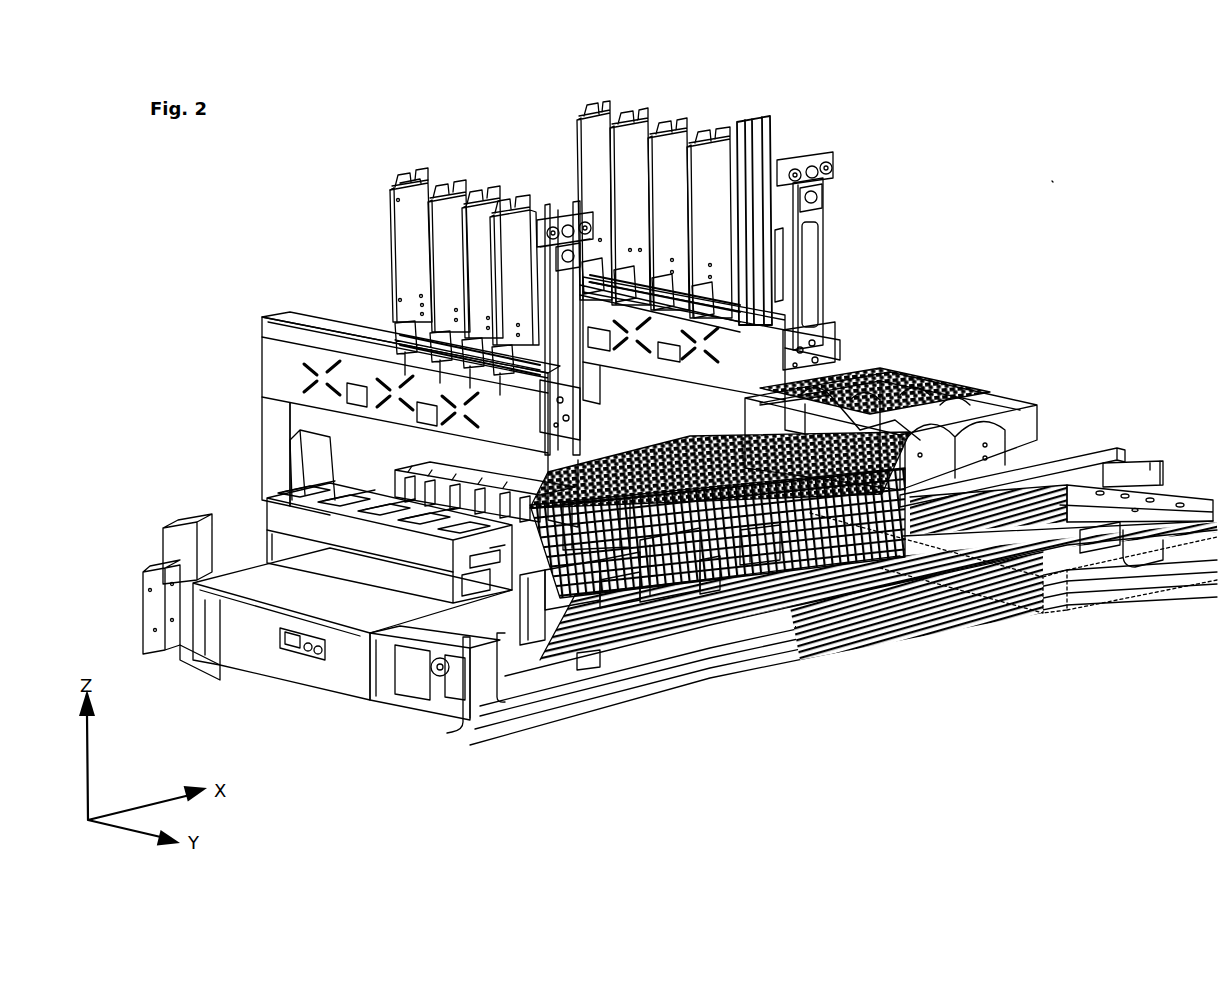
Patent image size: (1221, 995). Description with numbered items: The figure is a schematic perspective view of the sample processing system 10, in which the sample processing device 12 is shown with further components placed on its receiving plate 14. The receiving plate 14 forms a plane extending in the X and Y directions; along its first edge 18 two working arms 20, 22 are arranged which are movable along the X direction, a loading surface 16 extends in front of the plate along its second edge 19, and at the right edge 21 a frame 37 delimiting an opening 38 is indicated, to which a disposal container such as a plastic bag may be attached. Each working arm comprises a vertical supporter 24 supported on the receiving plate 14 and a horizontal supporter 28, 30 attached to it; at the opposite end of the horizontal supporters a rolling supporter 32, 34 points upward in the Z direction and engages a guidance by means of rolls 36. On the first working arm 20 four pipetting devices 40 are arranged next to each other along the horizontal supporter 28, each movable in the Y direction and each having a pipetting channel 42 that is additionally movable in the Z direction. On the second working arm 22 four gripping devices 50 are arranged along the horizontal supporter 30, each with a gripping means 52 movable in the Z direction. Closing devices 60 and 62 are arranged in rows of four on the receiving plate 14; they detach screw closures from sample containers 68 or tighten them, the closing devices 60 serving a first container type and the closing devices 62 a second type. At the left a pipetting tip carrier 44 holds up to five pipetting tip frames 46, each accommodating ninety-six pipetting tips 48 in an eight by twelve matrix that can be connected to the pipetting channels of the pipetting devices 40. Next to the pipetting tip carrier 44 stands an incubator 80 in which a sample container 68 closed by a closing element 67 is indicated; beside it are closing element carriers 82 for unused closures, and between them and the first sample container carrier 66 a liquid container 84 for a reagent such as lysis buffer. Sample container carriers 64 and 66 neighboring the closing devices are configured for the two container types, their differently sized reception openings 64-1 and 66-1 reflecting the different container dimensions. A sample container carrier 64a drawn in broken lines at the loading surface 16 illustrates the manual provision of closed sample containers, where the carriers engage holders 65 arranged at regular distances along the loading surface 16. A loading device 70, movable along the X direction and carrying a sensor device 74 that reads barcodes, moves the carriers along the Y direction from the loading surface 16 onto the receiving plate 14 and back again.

The sample processing system 10 is at (1052, 181).
The sample processing device 12 is at (540, 97).
The receiving plate 14 is at (317, 593).
The loading surface 16 is at (900, 585).
The first edge 18 is at (227, 567).
The second edge 19 is at (383, 642).
The first working arm 20 is at (238, 356).
The right edge 21 is at (1018, 465).
The second working arm 22 is at (832, 317).
The vertical supporter 24 is at (293, 426).
The horizontal supporter 28 is at (352, 392).
The horizontal supporter 30 is at (822, 342).
The rolling supporter 32 is at (565, 305).
The rolling supporter 34 is at (808, 277).
The rolls 36 is at (580, 220).
The frame 37 is at (1080, 433).
The opening 38 is at (1017, 423).
The pipetting devices 40 is at (437, 263).
The pipetting channel 42 is at (525, 187).
The pipetting tip carrier 44 is at (293, 523).
The pipetting tip frames 46 is at (273, 500).
The pipetting tips 48 is at (390, 497).
The gripping devices 50 is at (674, 197).
The gripping means 52 is at (783, 252).
The closing devices 60 is at (907, 383).
The closing devices 62 is at (953, 383).
The sample container carrier 64 is at (777, 560).
The reception openings 64-1 is at (830, 487).
The extension 64a is at (1000, 590).
The holders 65 is at (1160, 545).
The sample container carrier 66 is at (723, 560).
The reception openings 66-1 is at (757, 583).
The closing element 67 is at (507, 567).
The sample container 68 is at (560, 563).
The loading device 70 is at (667, 560).
The sensor device 74 is at (613, 593).
The incubator 80 is at (530, 583).
The closing element carriers 82 is at (423, 470).
The liquid container 84 is at (700, 580).